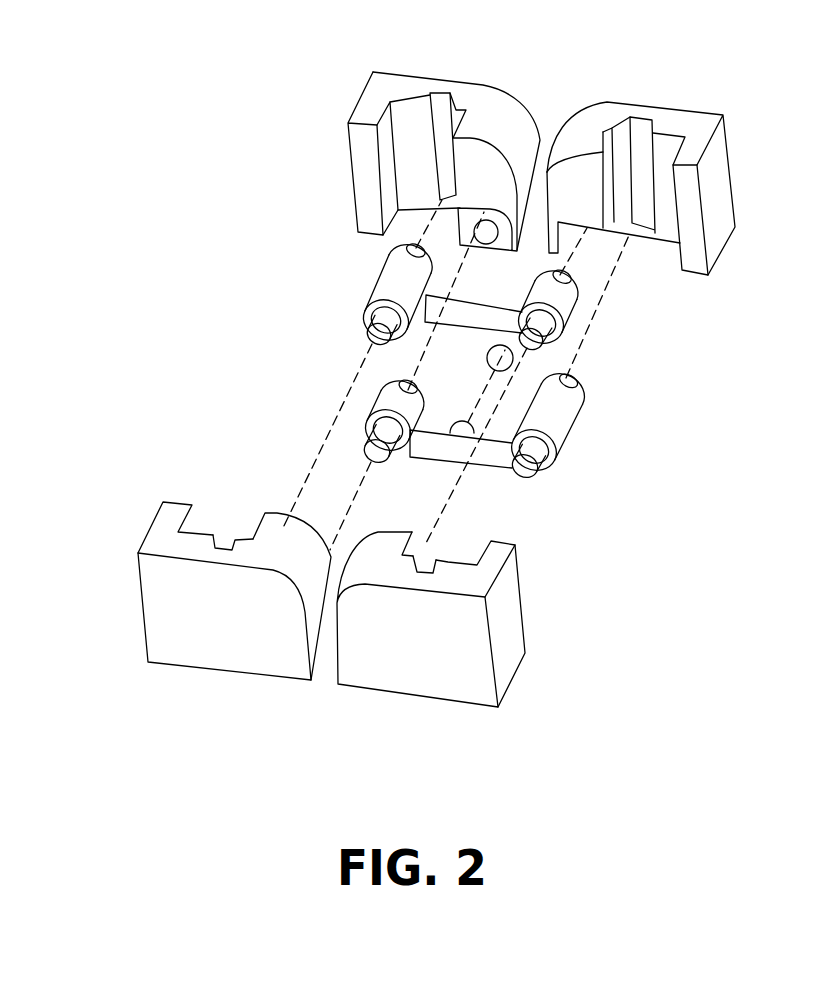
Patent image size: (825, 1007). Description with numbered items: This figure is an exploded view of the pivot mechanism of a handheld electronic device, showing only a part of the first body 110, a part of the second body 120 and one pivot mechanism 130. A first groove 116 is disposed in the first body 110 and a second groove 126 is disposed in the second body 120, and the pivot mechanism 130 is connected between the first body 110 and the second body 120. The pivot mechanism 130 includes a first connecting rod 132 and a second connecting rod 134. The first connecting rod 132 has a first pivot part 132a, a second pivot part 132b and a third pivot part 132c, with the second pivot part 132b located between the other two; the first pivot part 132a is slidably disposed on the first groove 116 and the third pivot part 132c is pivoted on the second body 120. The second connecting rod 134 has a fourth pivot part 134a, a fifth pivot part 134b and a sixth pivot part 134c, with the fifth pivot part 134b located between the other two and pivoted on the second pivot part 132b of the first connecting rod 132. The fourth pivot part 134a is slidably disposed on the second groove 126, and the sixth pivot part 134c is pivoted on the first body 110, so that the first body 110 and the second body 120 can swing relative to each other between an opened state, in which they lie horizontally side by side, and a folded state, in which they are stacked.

The first body 110 is at (377, 100).
The first groove 116 is at (442, 127).
The second body 120 is at (515, 623).
The second groove 126 is at (433, 561).
The pivot mechanism 130 is at (708, 605).
The first connecting rod 132 is at (492, 313).
The first pivot part 132a is at (625, 333).
The second pivot part 132b is at (487, 356).
The third pivot part 132c is at (578, 300).
The second connecting rod 134 is at (443, 452).
The fourth pivot part 134a is at (380, 468).
The fifth pivot part 134b is at (456, 428).
The sixth pivot part 134c is at (380, 468).